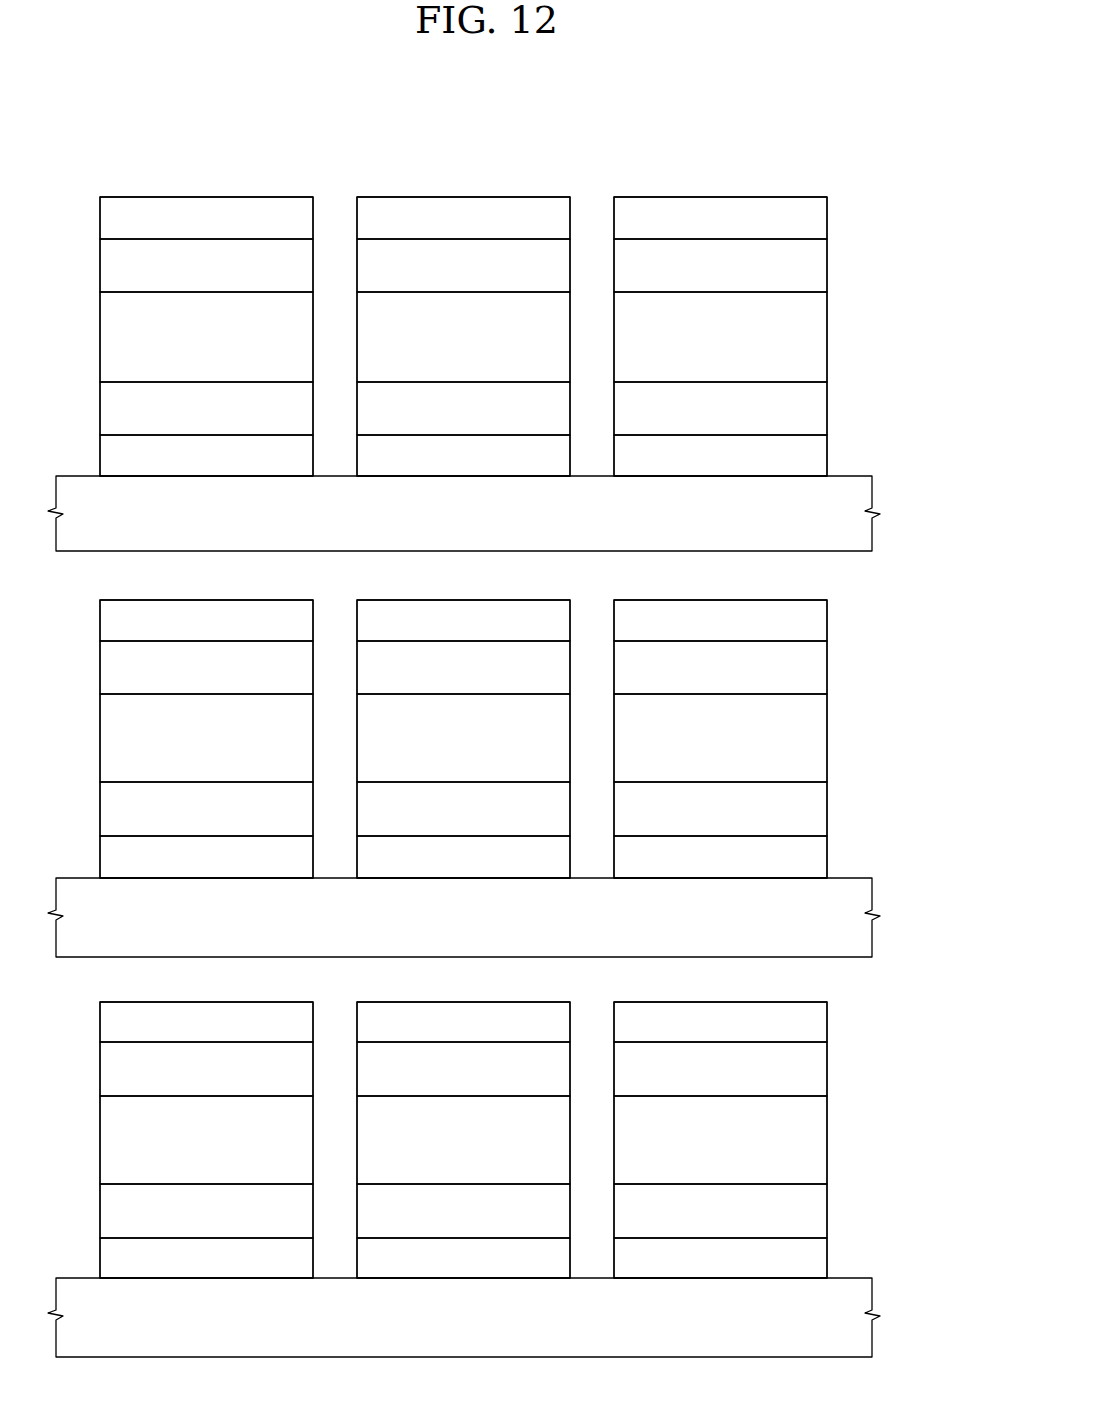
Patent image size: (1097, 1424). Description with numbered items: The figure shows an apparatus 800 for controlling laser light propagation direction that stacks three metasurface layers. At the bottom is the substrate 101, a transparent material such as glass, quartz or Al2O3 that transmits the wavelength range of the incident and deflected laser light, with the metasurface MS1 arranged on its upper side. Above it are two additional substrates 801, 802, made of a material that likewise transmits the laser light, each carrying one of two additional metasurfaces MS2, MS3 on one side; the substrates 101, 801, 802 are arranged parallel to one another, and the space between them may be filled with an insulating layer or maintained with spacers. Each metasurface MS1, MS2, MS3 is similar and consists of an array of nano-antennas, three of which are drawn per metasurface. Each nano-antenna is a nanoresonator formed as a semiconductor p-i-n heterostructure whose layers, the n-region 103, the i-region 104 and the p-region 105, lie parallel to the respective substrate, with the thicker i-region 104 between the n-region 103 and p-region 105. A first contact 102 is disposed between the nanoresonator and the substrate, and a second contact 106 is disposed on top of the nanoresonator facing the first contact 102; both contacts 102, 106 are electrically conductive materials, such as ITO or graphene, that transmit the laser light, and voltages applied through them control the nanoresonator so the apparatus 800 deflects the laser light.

The apparatus for controlling laser light propagation direction 800 is at (866, 152).
The metasurface MS1 is at (858, 1138).
The additional metasurface MS2 is at (858, 737).
The additional metasurface MS3 is at (858, 334).
The substrate 101 is at (137, 1330).
The additional substrate 801 is at (137, 927).
The additional substrate 802 is at (137, 525).
The first contact 102 is at (185, 467).
The n-region 103 is at (185, 418).
The i-region 104 is at (185, 347).
The p-region 105 is at (185, 277).
The second contact 106 is at (185, 233).